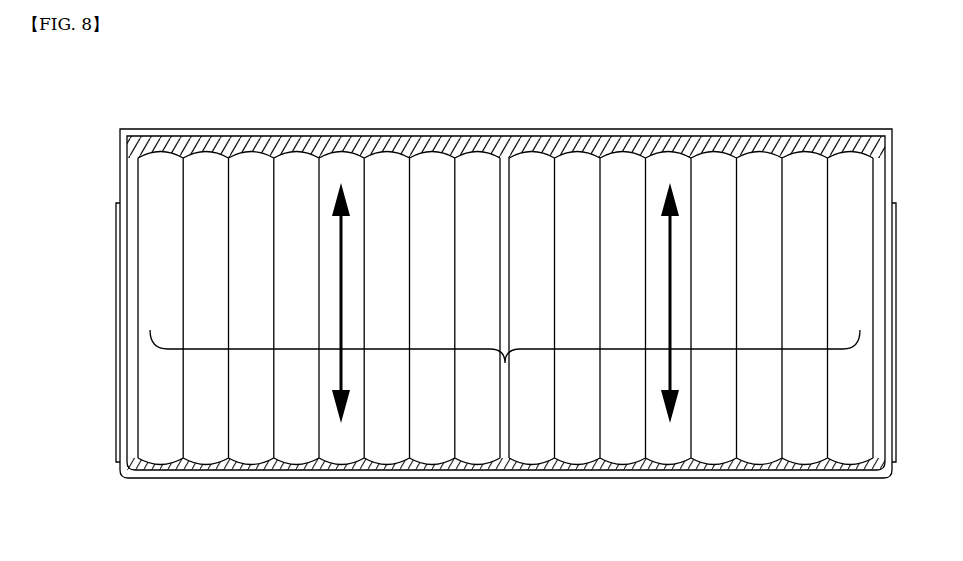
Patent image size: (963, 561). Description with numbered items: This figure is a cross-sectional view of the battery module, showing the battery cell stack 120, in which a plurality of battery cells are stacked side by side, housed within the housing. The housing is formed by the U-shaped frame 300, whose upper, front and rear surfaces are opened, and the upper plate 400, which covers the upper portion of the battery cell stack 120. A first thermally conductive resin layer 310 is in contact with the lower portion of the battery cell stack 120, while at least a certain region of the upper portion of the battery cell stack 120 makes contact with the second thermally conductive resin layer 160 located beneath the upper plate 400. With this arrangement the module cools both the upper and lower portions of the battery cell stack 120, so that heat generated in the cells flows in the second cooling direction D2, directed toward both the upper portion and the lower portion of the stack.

The upper plate 400 is at (198, 133).
The U-shaped frame 300 is at (127, 332).
The second thermally conductive resin layer 160 is at (457, 148).
The first thermally conductive resin layer 310 is at (272, 462).
The battery cell stack 120 is at (505, 363).
The second cooling direction D2 is at (339, 266).